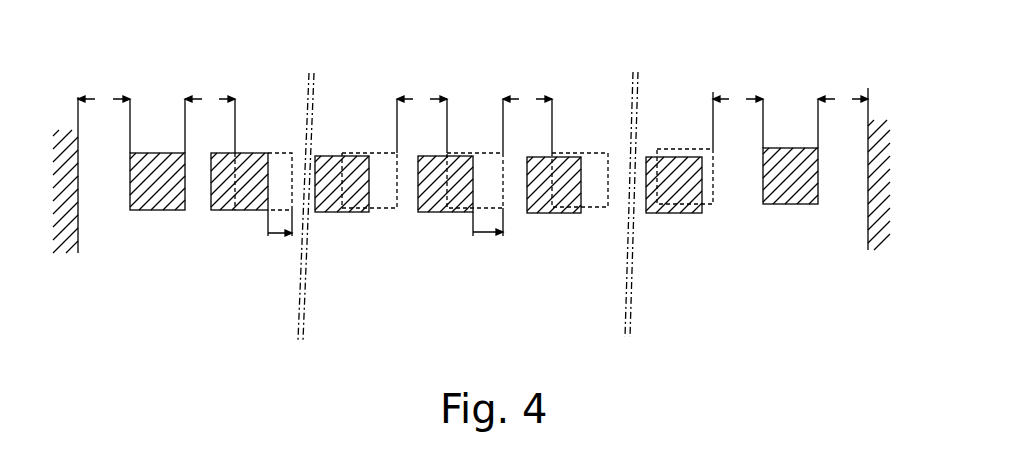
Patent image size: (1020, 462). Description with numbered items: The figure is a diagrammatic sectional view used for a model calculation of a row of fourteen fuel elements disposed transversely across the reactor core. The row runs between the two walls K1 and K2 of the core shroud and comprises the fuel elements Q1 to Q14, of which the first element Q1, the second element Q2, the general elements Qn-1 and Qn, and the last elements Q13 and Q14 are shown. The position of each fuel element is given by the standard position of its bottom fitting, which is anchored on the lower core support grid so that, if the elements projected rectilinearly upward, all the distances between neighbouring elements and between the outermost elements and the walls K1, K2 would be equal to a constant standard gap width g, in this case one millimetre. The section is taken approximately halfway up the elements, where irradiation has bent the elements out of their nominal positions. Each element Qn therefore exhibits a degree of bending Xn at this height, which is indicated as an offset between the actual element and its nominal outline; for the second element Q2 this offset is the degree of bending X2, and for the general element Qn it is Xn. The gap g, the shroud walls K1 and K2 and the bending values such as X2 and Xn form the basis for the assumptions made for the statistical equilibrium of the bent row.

The wall of the core shroud K1 is at (68, 240).
The wall of the core shroud K2 is at (882, 238).
The fuel element Q1 is at (161, 196).
The fuel element Q2 is at (251, 181).
The fuel element Qn-1 is at (332, 192).
The fuel element Qn is at (437, 192).
The fuel element Q13 is at (680, 192).
The fuel element Q14 is at (793, 190).
The degree of bending X2 is at (273, 234).
The degree of bending Xn is at (488, 234).
The gap of standard width g is at (473, 118).